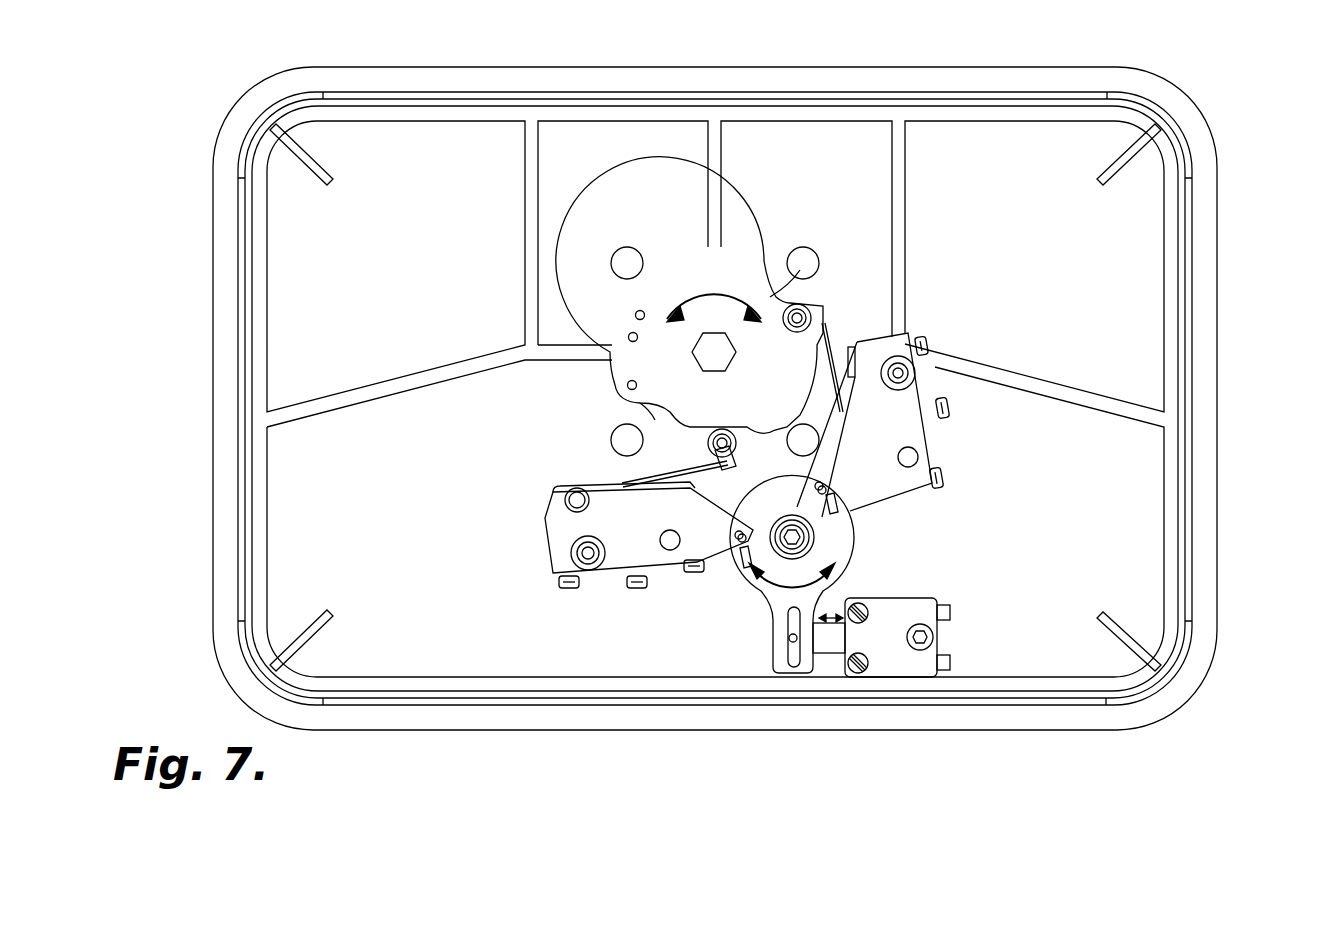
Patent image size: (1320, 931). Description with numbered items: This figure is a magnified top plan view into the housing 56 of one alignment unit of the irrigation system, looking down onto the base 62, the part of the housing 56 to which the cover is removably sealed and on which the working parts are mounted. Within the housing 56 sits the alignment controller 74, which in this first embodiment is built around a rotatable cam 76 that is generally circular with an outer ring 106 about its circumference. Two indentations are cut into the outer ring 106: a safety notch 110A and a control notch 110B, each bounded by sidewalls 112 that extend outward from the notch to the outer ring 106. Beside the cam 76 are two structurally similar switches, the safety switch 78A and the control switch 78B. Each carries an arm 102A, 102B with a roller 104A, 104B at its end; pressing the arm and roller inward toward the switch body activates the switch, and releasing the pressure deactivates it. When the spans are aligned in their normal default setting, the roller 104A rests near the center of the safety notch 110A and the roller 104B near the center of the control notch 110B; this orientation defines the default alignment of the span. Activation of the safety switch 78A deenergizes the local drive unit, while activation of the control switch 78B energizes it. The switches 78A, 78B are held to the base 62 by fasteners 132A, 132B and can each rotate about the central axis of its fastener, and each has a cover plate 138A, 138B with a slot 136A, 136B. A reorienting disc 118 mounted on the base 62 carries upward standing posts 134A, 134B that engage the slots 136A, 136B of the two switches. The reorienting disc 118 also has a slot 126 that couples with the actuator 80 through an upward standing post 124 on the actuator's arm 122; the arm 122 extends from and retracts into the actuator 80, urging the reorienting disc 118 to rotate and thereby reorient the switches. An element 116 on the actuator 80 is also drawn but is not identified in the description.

The housing 56 is at (1222, 306).
The base 62 is at (1148, 223).
The alignment controller 74 is at (940, 261).
The rotatable cam 76 is at (697, 277).
The safety switch 78A is at (622, 560).
The control switch 78B is at (906, 424).
The actuator 80 is at (902, 670).
The arm 102A is at (645, 482).
The arm 102B is at (817, 333).
The roller 104A is at (710, 441).
The roller 104B is at (802, 304).
The outer ring 106 is at (620, 312).
The safety notch 110A is at (650, 405).
The control notch 110B is at (770, 298).
The sidewalls 112 is at (773, 284).
The fastener 116 is at (930, 637).
The reorienting disc 118 is at (828, 545).
The arm 122 is at (828, 640).
The upward standing post 124 is at (789, 638).
The slot 126 is at (790, 665).
The fastener 132A is at (575, 556).
The fastener 132B is at (908, 373).
The upward standing post 134A is at (743, 556).
The upward standing post 134B is at (830, 498).
The slot 136A is at (738, 537).
The slot 136B is at (828, 490).
The cover plate 138A is at (560, 526).
The cover plate 138B is at (908, 398).